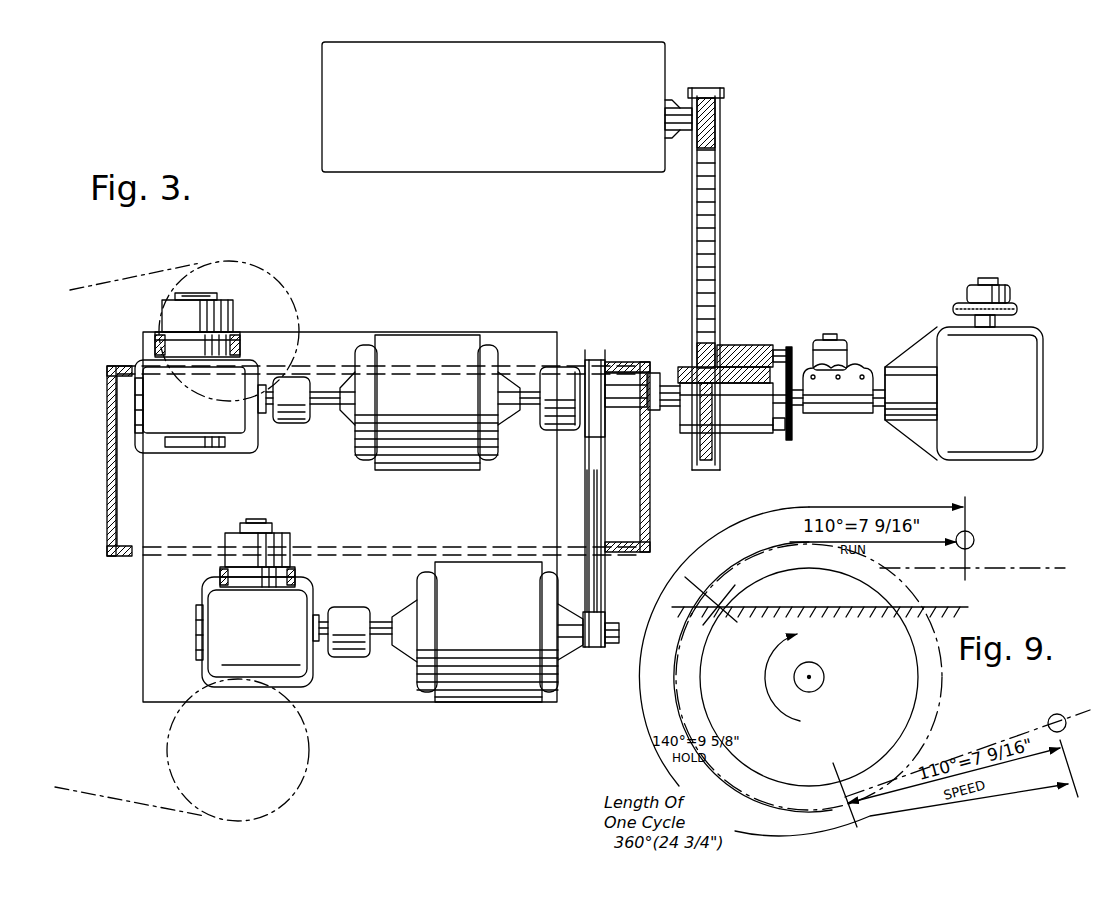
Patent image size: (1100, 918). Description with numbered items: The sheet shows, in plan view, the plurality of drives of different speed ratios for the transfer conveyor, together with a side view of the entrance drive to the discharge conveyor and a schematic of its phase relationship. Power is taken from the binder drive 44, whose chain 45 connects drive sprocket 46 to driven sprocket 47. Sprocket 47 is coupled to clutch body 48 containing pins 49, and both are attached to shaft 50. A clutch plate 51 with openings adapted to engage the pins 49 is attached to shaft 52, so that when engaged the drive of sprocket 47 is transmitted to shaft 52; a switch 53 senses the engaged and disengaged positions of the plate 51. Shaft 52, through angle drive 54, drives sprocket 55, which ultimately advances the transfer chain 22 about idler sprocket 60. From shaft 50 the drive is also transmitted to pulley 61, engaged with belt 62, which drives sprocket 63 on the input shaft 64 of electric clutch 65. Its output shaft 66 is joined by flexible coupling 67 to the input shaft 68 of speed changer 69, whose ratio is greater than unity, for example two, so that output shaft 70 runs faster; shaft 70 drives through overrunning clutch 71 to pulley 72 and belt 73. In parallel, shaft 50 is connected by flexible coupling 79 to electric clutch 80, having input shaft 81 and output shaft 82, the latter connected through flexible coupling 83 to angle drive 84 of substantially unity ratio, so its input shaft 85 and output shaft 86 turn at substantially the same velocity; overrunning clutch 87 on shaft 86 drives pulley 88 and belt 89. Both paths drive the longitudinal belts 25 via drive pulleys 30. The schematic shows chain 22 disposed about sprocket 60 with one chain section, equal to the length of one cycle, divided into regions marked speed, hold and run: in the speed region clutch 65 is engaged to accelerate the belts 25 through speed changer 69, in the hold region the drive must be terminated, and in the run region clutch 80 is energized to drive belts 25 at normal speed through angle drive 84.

In FIG. 9, the transfer chain 22 is at (730, 576).
In FIG. 3, the belts 25 is at (112, 280).
In FIG. 3, the drive pulleys 30 is at (170, 289).
In FIG. 3, the drive 44 is at (502, 128).
In FIG. 3, the chain 45 is at (720, 184).
In FIG. 3, the drive sprocket 46 is at (712, 95).
In FIG. 3, the driven sprocket 47 is at (695, 365).
In FIG. 3, the clutch body 48 is at (740, 435).
In FIG. 3, the pins 49 is at (778, 350).
In FIG. 3, the shaft 50 is at (626, 408).
In FIG. 3, the clutch plate 51 is at (793, 412).
In FIG. 3, the shaft 52 is at (878, 382).
In FIG. 3, the switch 53 is at (836, 345).
In FIG. 3, the angle drive 54 is at (1005, 440).
In FIG. 3, the sprocket 55 is at (1012, 306).
In FIG. 9, the idler sprocket 60 is at (912, 690).
In FIG. 3, the pulley 61 is at (586, 432).
In FIG. 3, the belt 62 is at (598, 590).
In FIG. 3, the sprocket 63 is at (600, 650).
In FIG. 3, the input shaft 64 is at (612, 643).
In FIG. 3, the electric clutch 65 is at (504, 636).
In FIG. 3, the output shaft 66 is at (383, 640).
In FIG. 3, the flexible coupling 67 is at (362, 616).
In FIG. 3, the input shaft 68 is at (318, 642).
In FIG. 3, the speed changer 69 is at (274, 643).
In FIG. 3, the output shaft 70 is at (252, 522).
In FIG. 3, the overrunning clutch 71 is at (232, 545).
In FIG. 3, the pulley 72 is at (294, 582).
In FIG. 3, the belt 73 is at (222, 573).
In FIG. 3, the flexible coupling 79 is at (565, 372).
In FIG. 3, the electric clutch 80 is at (418, 355).
In FIG. 3, the input shaft 81 is at (530, 408).
In FIG. 3, the output shaft 82 is at (313, 395).
In FIG. 3, the flexible coupling 83 is at (313, 404).
In FIG. 3, the angle drive 84 is at (165, 410).
In FIG. 3, the input shaft 85 is at (266, 412).
In FIG. 3, the output shaft 86 is at (198, 299).
In FIG. 3, the overrunning clutch 87 is at (226, 318).
In FIG. 3, the pulley 88 is at (228, 338).
In FIG. 3, the belt 89 is at (160, 345).